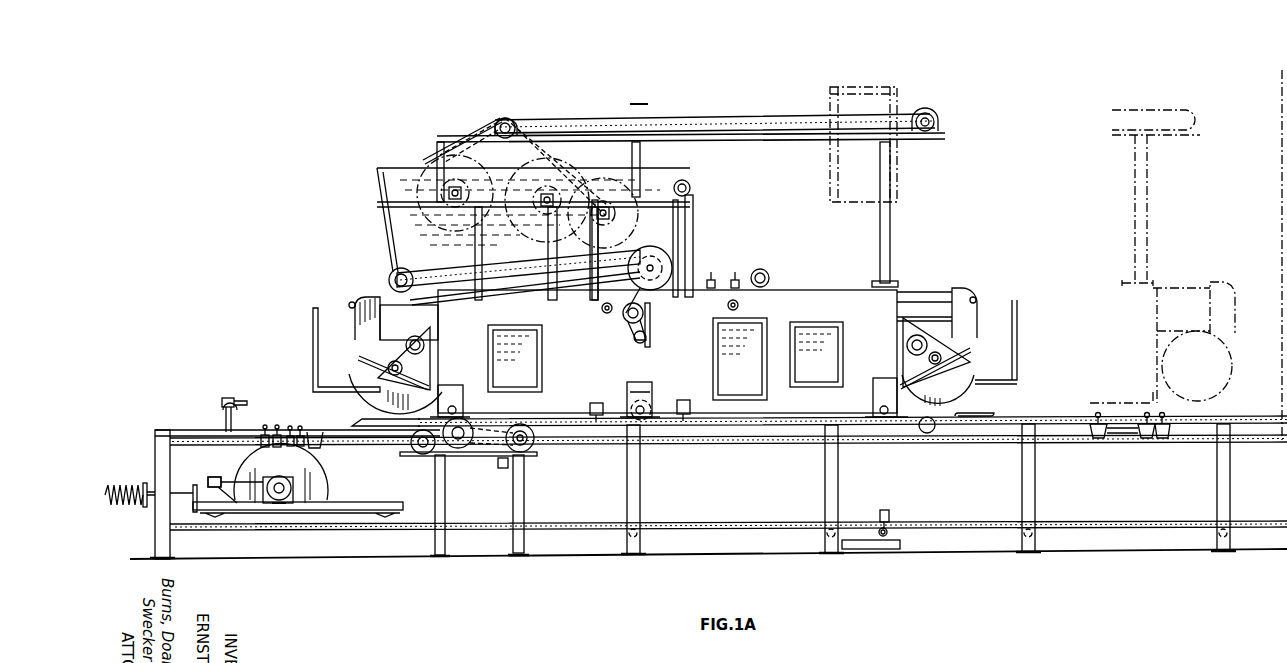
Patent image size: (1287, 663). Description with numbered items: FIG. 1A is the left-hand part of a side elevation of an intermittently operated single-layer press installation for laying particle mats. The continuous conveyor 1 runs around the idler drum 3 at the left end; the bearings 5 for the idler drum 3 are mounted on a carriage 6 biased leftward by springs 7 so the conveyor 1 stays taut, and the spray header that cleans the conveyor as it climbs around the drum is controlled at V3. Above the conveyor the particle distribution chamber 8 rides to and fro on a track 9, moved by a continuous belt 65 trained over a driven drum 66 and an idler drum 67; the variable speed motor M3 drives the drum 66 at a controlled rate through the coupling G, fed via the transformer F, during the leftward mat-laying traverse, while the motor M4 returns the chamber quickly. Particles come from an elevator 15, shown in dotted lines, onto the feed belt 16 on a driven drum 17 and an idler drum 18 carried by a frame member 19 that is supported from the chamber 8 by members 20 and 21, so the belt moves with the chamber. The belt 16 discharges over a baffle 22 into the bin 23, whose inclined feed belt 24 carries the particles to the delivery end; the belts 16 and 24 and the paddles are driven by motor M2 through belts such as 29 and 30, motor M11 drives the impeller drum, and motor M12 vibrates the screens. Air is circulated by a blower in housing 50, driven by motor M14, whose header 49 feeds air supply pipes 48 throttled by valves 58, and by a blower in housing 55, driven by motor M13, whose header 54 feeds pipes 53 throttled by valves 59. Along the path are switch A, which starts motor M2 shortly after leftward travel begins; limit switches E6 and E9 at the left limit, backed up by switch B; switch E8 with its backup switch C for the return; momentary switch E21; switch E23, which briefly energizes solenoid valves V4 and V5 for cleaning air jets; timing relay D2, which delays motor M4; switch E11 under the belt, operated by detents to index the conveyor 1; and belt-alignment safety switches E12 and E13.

The continuous conveyor 1 is at (752, 528).
The idler drum 3 is at (325, 492).
The bearings 5 is at (276, 500).
The carriage 6 is at (373, 512).
The springs 7 is at (127, 507).
The particle distribution chamber 8 is at (810, 290).
The track 9 is at (996, 430).
The elevator 15 is at (830, 88).
The continuous feed belt 16 is at (725, 114).
The driven drum 17 is at (505, 115).
The idler drum 18 is at (930, 118).
The frame member 19 is at (778, 146).
The support member 20 is at (890, 228).
The support member 21 is at (468, 168).
The baffle 22 is at (480, 130).
The bin 23 is at (380, 192).
The inclined feed belt 24 is at (523, 287).
The belt 29 is at (625, 315).
The belt 30 is at (652, 290).
The air supply pipes 48 is at (912, 292).
The header 49 is at (972, 315).
The blower housing 50 is at (944, 337).
The pipes 53 is at (385, 305).
The header 54 is at (355, 320).
The blower housing 55 is at (380, 345).
The valves 58 is at (973, 296).
The valves 59 is at (352, 302).
The continuous belt 65 is at (735, 441).
The driven drum 66 is at (478, 420).
The idler drum 67 is at (930, 433).
The safety switch A is at (688, 403).
The safety limit switch B is at (263, 432).
The safety limit switch C is at (1163, 440).
The timing control relay D2 is at (279, 481).
The limit switch E6 is at (305, 447).
The limit switch E8 is at (1147, 440).
The limit switch E9 is at (275, 447).
The switch E11 is at (889, 515).
The limit switch E12 is at (221, 478).
The limit switch E13 is at (217, 478).
The momentary contact switch E21 is at (1098, 440).
The switch E23 is at (600, 392).
The transformer F is at (500, 470).
The electro-mechanical coupling G is at (459, 448).
The motor M2 is at (636, 337).
The variable speed motor M3 is at (542, 450).
The motor M4 is at (420, 455).
The motor M11 is at (690, 187).
The motor M12 is at (768, 278).
The motor M13 is at (425, 345).
The motor M14 is at (907, 345).
The valve V3 is at (226, 398).
The solenoid valve V4 is at (711, 272).
The solenoid valve V5 is at (735, 272).